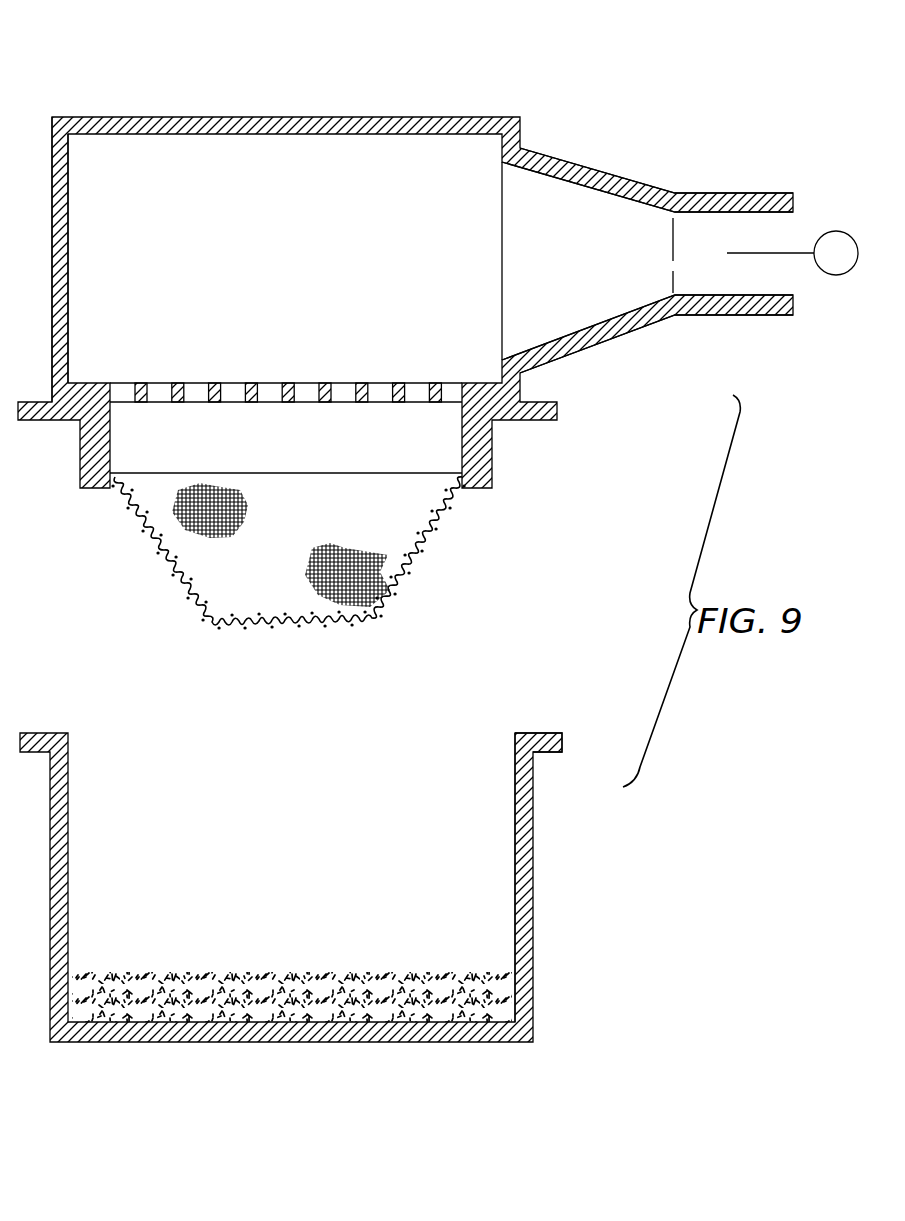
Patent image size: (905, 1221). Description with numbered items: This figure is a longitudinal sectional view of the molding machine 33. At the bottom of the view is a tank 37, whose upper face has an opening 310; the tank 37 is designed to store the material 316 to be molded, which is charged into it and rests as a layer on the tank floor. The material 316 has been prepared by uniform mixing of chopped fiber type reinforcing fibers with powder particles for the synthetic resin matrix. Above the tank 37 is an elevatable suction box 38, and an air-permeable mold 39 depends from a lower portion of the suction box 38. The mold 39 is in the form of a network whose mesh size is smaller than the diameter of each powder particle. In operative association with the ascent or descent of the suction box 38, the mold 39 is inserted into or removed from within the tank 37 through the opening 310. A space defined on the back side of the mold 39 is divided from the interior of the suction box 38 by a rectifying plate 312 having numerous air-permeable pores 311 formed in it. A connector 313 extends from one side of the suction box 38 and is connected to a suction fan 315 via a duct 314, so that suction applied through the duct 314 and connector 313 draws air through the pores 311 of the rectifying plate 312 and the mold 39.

The molding machine 33 is at (407, 99).
The suction box 38 is at (60, 277).
The rectifying plate 312 is at (180, 393).
The air-permeable pores 311 is at (265, 392).
The connector 313 is at (603, 180).
The duct 314 is at (800, 253).
The suction fan 315 is at (838, 262).
The air-permeable mold 39 is at (422, 545).
The opening 310 is at (513, 763).
The tank 37 is at (525, 844).
The material 316 is at (373, 972).